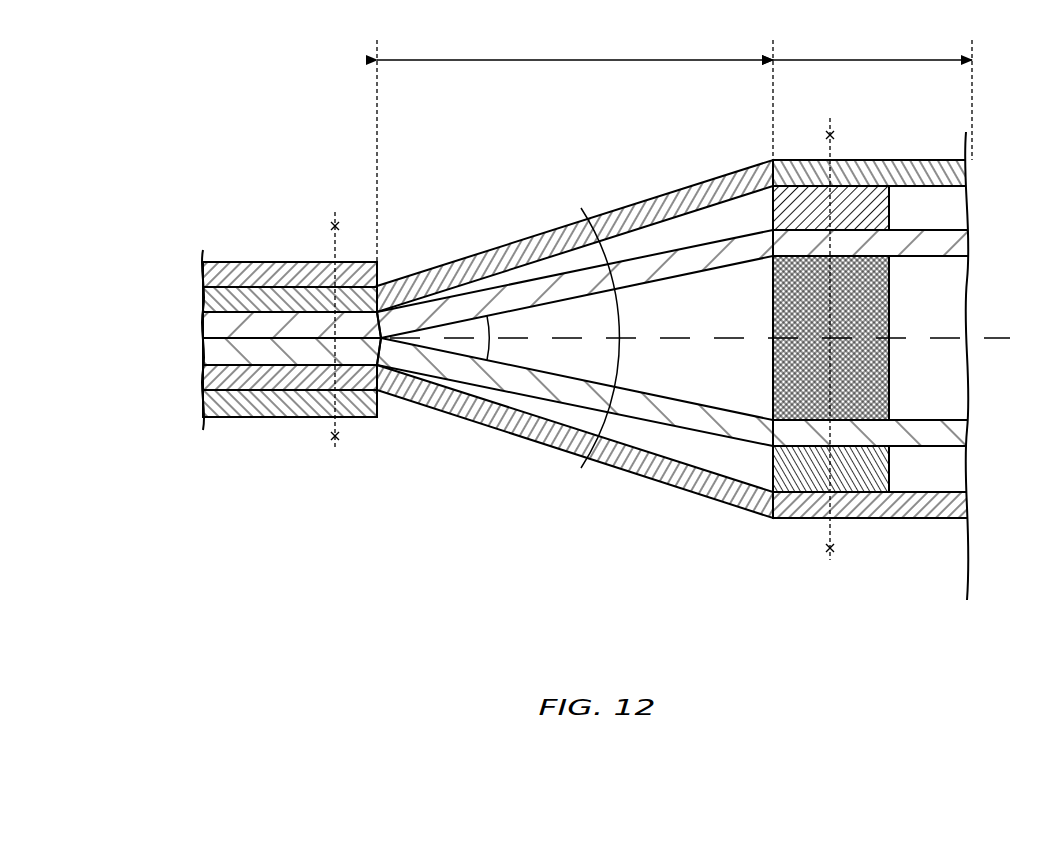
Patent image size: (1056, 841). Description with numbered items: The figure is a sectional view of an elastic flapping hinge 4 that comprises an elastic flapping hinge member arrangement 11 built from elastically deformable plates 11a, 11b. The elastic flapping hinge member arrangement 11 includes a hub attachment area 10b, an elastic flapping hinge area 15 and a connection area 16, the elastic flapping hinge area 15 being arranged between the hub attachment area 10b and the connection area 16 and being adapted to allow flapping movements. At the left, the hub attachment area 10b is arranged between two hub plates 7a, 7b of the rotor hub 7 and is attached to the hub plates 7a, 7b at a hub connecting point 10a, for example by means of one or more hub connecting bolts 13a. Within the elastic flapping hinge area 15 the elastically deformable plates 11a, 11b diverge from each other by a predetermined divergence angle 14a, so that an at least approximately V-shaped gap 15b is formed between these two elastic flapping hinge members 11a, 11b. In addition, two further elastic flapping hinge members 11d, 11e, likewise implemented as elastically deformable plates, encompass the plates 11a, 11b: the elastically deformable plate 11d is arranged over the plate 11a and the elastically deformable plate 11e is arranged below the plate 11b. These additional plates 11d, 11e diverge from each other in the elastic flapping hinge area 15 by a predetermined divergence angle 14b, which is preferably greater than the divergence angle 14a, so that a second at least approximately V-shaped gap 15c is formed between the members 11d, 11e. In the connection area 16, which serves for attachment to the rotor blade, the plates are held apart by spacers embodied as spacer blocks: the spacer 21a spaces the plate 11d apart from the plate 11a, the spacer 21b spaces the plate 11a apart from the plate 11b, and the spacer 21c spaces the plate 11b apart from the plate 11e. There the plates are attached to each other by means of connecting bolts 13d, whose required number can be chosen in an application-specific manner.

The elastic flapping hinge 4 is at (626, 496).
The rotor hub 7 is at (206, 258).
The hub plate 7a is at (246, 262).
The hub plate 7b is at (246, 417).
The hub connecting point 10a is at (333, 204).
The hub attachment area 10b is at (203, 381).
The elastic flapping hinge member arrangement 11 is at (553, 464).
The elastically deformable plate 11a is at (688, 276).
The elastically deformable plate 11b is at (690, 402).
The additional elastically deformable plate 11d is at (531, 238).
The additional elastically deformable plate 11e is at (535, 441).
The hub connecting bolt 13a is at (337, 437).
The connecting bolt 13d is at (835, 547).
The predetermined divergence angle 14a is at (490, 332).
The predetermined divergence angle 14b is at (622, 363).
The elastic flapping hinge area 15 is at (555, 58).
The V-shaped gap 15b is at (667, 301).
The V-shaped gap 15c is at (567, 266).
The connection area 16 is at (828, 58).
The spacer 21a is at (895, 206).
The spacer 21b is at (895, 307).
The spacer 21c is at (895, 468).